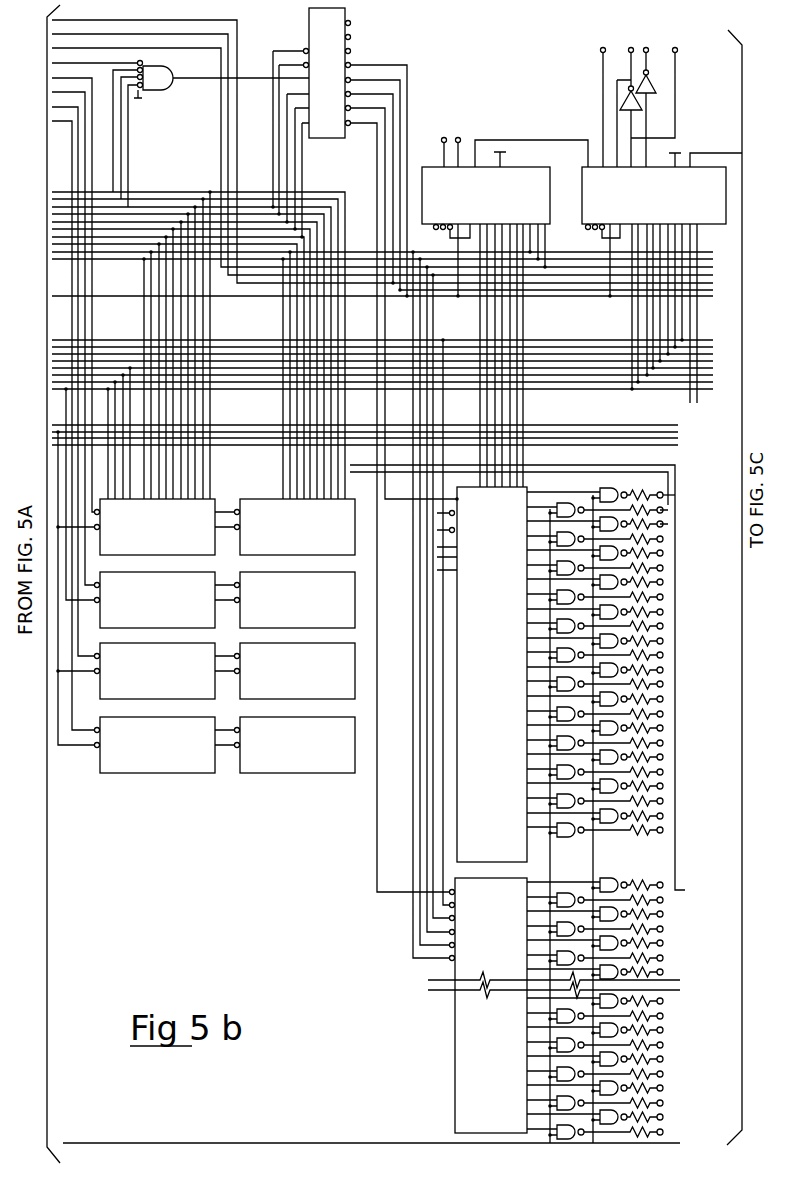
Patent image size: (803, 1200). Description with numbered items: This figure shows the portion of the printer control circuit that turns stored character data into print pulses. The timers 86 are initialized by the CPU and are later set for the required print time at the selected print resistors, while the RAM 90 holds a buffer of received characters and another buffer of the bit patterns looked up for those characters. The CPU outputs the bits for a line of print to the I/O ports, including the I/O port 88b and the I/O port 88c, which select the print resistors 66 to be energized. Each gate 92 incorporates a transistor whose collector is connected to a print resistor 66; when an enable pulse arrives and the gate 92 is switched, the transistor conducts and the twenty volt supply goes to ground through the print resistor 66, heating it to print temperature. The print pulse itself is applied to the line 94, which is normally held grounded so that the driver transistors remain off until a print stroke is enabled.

The timers 86 is at (496, 206).
The RAM 90 is at (225, 636).
The I/O port 88b is at (516, 663).
The I/O port 88c is at (514, 924).
The gate 92 is at (601, 813).
The print resistors 66 is at (645, 491).
The line 94 is at (326, 1143).